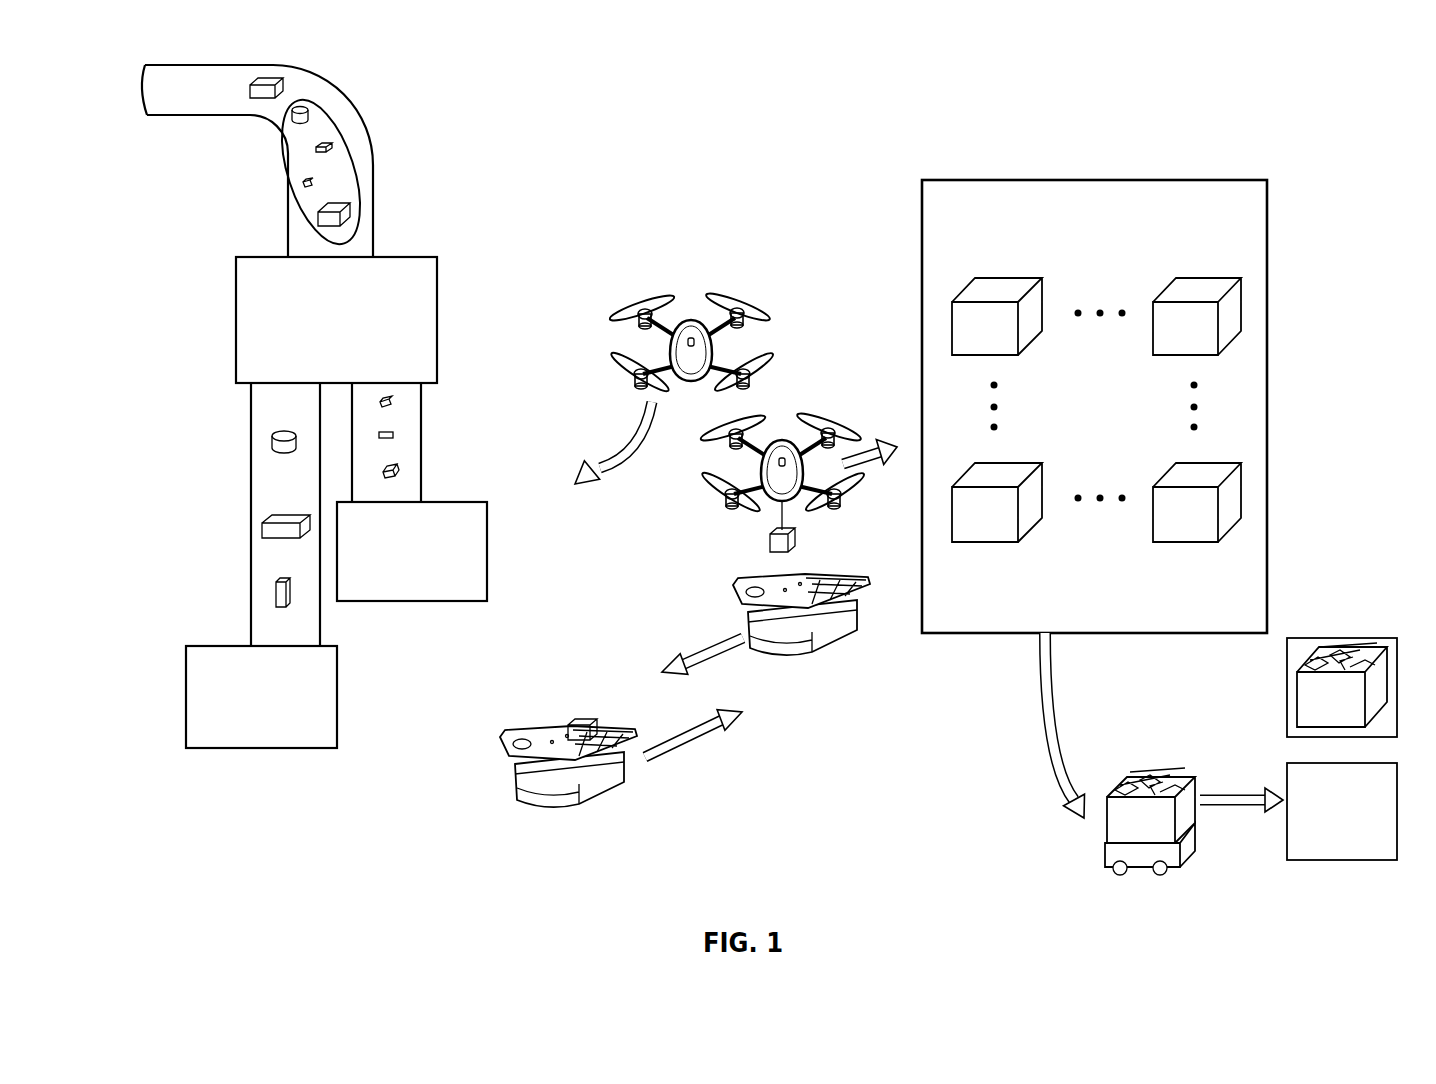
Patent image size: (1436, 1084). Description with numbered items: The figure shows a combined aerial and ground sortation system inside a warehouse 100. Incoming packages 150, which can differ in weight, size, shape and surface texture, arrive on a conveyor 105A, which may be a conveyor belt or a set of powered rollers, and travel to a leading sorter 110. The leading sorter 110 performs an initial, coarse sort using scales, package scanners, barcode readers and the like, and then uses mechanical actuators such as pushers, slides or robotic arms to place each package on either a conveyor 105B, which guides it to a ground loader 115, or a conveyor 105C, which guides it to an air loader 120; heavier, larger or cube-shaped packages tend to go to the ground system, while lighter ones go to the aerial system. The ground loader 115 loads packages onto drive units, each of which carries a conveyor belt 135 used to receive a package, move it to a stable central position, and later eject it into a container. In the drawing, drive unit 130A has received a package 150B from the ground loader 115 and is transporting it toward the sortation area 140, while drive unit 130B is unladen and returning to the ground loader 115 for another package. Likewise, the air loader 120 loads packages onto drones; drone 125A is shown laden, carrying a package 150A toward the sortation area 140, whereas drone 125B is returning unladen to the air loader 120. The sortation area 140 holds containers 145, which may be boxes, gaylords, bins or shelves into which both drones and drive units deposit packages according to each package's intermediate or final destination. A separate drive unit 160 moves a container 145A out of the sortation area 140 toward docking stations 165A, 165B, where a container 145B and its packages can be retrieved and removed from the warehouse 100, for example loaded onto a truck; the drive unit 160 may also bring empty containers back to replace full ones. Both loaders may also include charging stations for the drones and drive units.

The warehouse 100 is at (1216, 84).
The conveyor 105A is at (373, 133).
The conveyor 105B is at (251, 435).
The conveyor 105C is at (421, 411).
The leading sorter 110 is at (236, 318).
The ground loader 115 is at (186, 700).
The air loader 120 is at (412, 601).
The drone 125A is at (787, 433).
The drone 125B is at (694, 318).
The drive unit 130A is at (512, 756).
The drive unit 130B is at (826, 655).
The conveyor belt 135 is at (443, 770).
The sortation area 140 is at (998, 180).
The containers 145 is at (990, 278).
The container 145A is at (1127, 777).
The container 145B is at (1368, 648).
The packages 150 is at (361, 208).
The package 150A is at (770, 548).
The package 150B is at (572, 722).
The drive unit 160 is at (1105, 846).
The docking station 165A is at (1287, 672).
The docking station 165B is at (1342, 862).